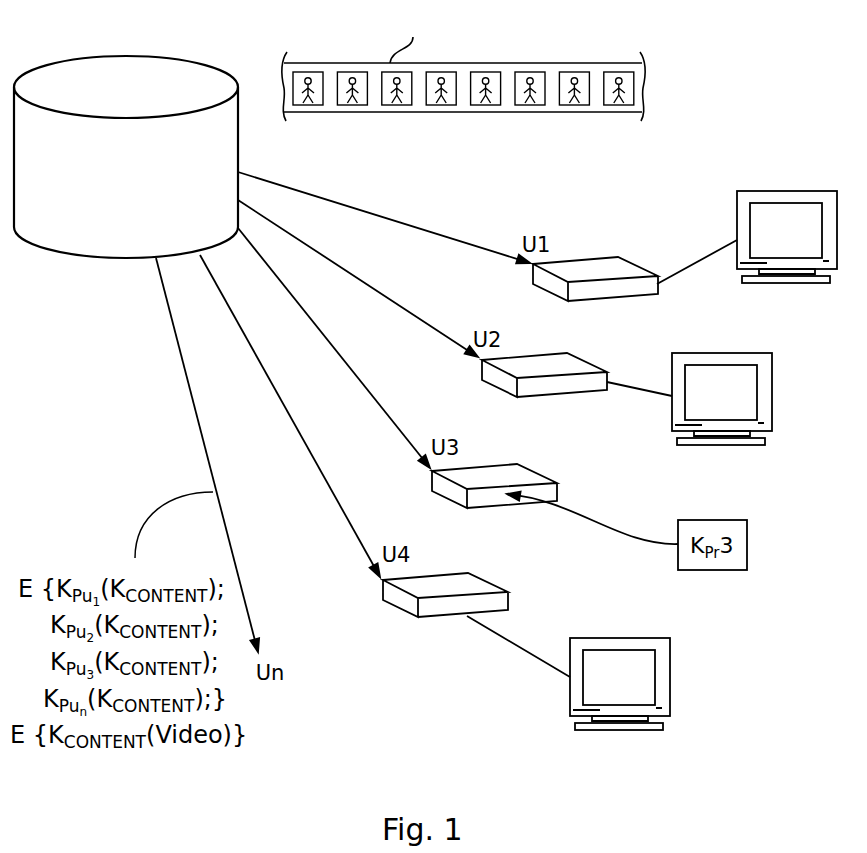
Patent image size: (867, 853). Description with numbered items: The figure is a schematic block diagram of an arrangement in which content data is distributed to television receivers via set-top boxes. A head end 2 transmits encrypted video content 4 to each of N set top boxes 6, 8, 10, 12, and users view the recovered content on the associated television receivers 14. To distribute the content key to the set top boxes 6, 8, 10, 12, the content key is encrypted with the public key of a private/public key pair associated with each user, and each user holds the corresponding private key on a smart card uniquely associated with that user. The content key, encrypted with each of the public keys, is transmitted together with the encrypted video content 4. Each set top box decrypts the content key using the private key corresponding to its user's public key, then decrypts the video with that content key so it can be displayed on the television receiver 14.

The head end 2 is at (123, 55).
The encrypted video content 4 is at (459, 113).
The set top box 6 is at (618, 258).
The set top box 8 is at (568, 353).
The set top box 10 is at (518, 463).
The set top box 12 is at (468, 572).
The television receiver 14 is at (788, 191).